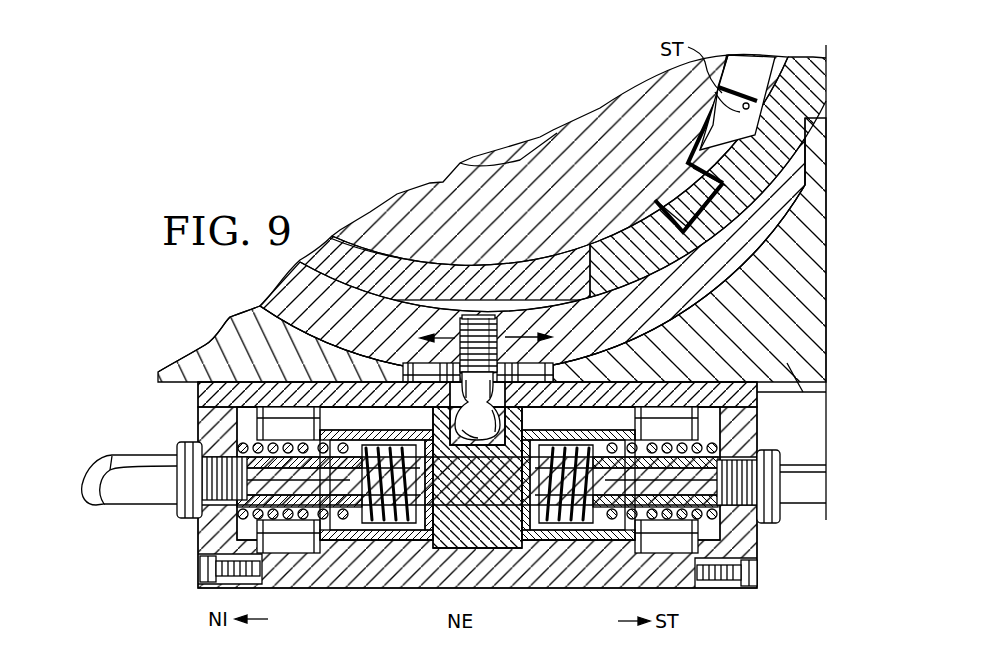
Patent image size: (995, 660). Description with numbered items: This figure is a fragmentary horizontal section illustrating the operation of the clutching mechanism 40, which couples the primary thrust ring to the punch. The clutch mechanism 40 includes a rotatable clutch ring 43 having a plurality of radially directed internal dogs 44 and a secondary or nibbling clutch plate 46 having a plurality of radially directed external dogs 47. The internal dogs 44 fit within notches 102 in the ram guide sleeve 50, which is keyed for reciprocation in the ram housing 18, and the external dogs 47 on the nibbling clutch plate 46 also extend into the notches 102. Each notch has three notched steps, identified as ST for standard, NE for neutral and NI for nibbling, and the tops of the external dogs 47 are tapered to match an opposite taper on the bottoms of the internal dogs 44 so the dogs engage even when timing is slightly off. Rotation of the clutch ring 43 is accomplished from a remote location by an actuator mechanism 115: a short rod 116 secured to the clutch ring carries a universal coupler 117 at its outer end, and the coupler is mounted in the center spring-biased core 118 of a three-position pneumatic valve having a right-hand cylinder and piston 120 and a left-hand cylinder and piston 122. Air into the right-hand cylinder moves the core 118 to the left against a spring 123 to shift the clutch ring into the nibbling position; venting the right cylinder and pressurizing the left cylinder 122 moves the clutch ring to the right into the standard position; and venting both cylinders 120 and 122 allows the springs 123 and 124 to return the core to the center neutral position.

The ram housing 18 is at (791, 388).
The clutch mechanism 40 is at (753, 250).
The clutch ring 43 is at (750, 227).
The internal dogs 44 is at (742, 172).
The nibbling clutch plate 46 is at (595, 207).
The external dogs 47 is at (702, 205).
The ram guide sleeve 50 is at (740, 72).
The notches 102 is at (758, 72).
The actuator mechanism 115 is at (203, 572).
The short rod 116 is at (512, 313).
The universal coupler 117 is at (496, 408).
The core 118 is at (497, 540).
The right-hand cylinder and piston 120 is at (643, 428).
The left-hand cylinder and piston 122 is at (316, 408).
The spring 123 is at (240, 447).
The spring 124 is at (717, 453).